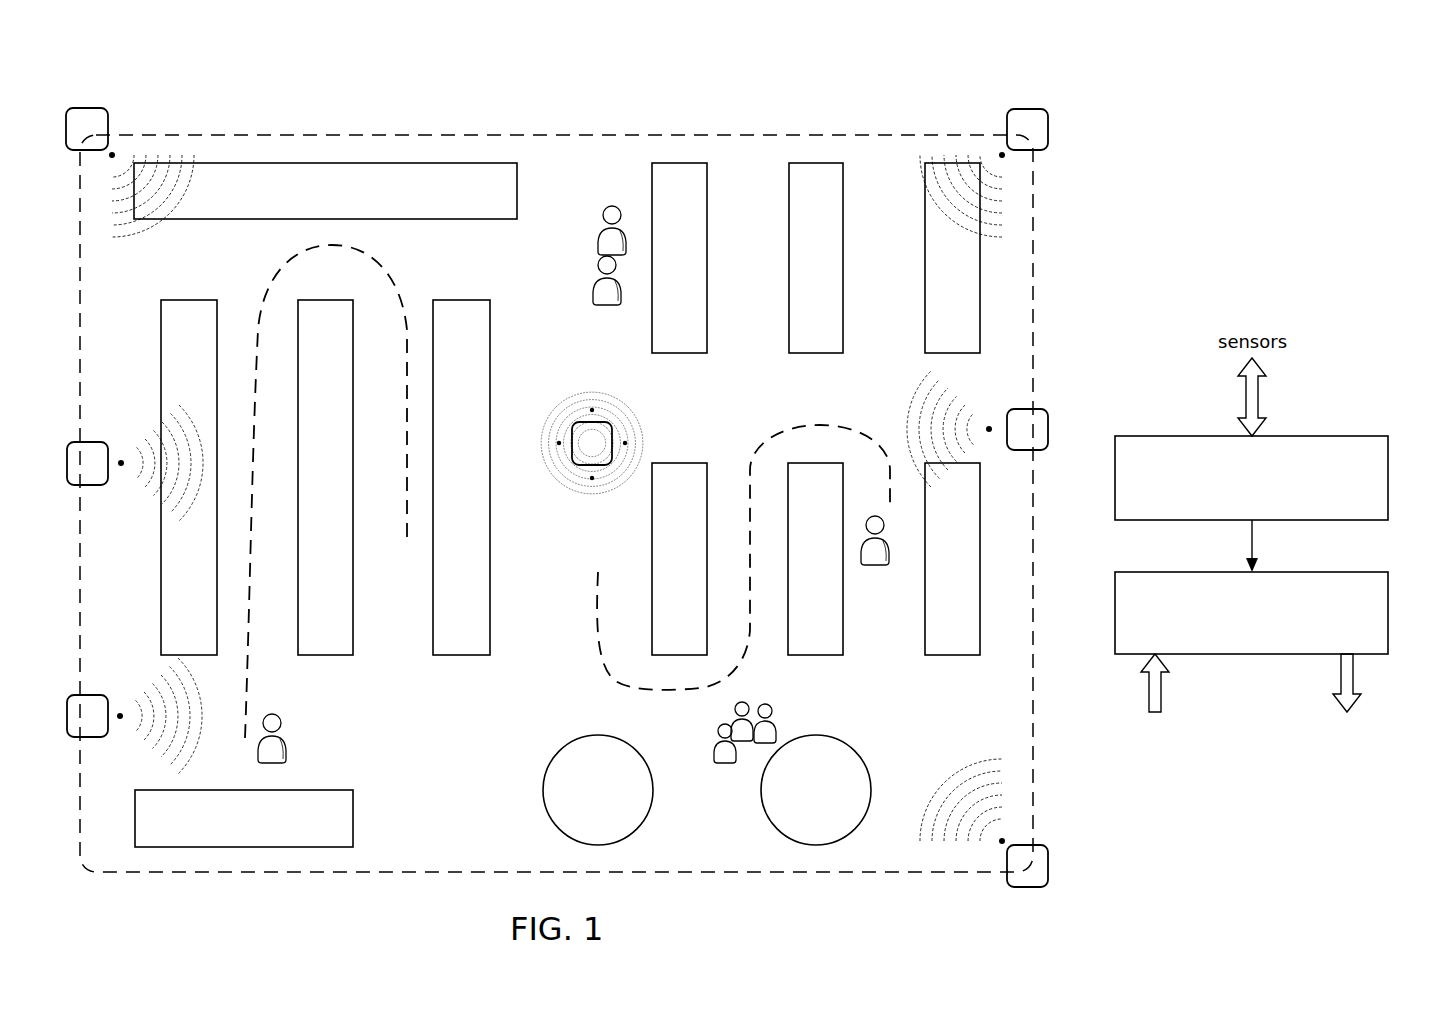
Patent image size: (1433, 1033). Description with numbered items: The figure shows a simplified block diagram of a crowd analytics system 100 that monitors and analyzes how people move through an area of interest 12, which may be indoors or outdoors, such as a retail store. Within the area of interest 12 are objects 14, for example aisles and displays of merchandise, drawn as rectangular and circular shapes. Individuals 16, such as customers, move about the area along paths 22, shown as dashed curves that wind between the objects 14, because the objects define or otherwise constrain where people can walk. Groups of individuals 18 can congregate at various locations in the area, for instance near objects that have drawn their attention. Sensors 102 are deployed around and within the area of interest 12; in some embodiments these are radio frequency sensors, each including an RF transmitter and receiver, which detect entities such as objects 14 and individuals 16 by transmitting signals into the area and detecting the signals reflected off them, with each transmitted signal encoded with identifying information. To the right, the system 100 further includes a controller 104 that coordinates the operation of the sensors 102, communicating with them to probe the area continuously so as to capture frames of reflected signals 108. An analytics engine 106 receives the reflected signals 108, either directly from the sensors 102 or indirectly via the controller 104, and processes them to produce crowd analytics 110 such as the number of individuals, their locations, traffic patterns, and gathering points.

The crowd analytics system 100 is at (1145, 78).
The sensors 102 is at (94, 108).
The area of interest 12 is at (557, 135).
The objects 14 is at (314, 200).
The individuals 16 is at (293, 738).
The groups of individuals 18 is at (582, 256).
The paths 22 is at (268, 274).
The controller 104 is at (1316, 488).
The analytics engine 106 is at (1347, 624).
The reflected signals 108 is at (1155, 707).
The crowd analytics 110 is at (1347, 707).